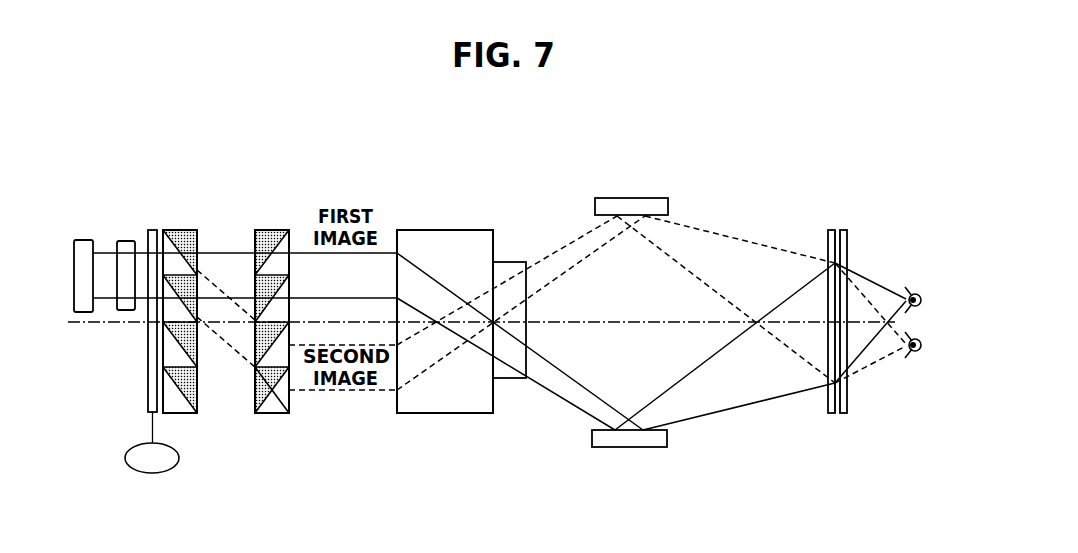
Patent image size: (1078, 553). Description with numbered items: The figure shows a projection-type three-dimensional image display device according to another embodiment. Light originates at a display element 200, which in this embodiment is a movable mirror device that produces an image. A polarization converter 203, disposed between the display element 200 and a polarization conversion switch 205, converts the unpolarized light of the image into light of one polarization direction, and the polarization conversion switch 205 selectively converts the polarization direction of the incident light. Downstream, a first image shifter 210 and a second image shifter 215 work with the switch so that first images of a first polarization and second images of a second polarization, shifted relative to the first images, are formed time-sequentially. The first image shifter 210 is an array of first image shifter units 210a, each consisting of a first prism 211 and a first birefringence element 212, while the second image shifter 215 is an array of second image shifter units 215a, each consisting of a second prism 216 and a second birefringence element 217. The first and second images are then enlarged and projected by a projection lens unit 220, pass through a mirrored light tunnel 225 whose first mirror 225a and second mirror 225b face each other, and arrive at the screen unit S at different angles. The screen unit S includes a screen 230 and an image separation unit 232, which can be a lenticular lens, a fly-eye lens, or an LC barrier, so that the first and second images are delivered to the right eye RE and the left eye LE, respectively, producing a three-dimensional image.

The display element 200 is at (83, 240).
The polarization converter 203 is at (127, 241).
The polarization conversion switch 205 is at (153, 230).
The first image shifter 210 is at (204, 322).
The first prism 211 is at (175, 403).
The first birefringence element 212 is at (188, 382).
The first image shifter unit 210a is at (252, 423).
The second image shifter 215 is at (298, 313).
The second prism 216 is at (275, 400).
The second birefringence element 217 is at (290, 390).
The second image shifter unit 215a is at (353, 460).
The projection lens unit 220 is at (445, 230).
The mirrored light tunnel 225 is at (589, 324).
The first mirror 225a is at (632, 198).
The second mirror 225b is at (628, 448).
The screen unit S is at (838, 317).
The screen 230 is at (827, 405).
The image separation unit 232 is at (847, 405).
The right eye RE is at (917, 285).
The left eye LE is at (917, 357).